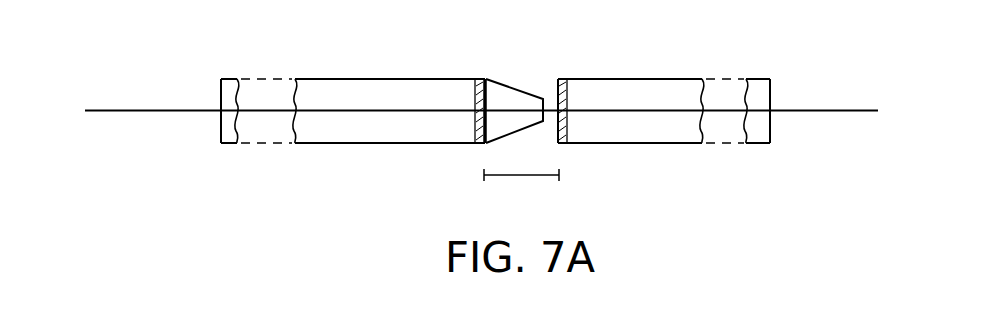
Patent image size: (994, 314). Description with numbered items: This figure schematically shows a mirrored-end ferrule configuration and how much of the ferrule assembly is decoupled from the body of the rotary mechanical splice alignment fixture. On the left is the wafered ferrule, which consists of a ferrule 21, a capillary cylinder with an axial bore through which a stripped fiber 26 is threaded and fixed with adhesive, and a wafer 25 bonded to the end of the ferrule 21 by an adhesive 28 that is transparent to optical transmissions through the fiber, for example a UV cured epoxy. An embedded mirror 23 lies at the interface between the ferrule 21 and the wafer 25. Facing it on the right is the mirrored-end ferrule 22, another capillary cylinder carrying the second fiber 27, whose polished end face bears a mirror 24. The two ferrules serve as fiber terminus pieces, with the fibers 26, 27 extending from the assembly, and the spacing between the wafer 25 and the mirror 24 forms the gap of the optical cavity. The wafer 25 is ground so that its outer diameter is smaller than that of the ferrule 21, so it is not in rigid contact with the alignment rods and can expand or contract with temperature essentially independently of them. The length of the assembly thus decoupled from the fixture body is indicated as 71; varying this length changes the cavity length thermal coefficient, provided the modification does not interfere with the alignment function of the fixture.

The ferrule 21 is at (337, 133).
The mirrored-end ferrule 22 is at (682, 128).
The mirror 23 is at (484, 146).
The mirror 24 is at (562, 143).
The wafer 25 is at (509, 102).
The fiber 26 is at (150, 113).
The fiber 27 is at (864, 113).
The adhesive 28 is at (485, 78).
The length decoupled from the fixture body 71 is at (521, 190).